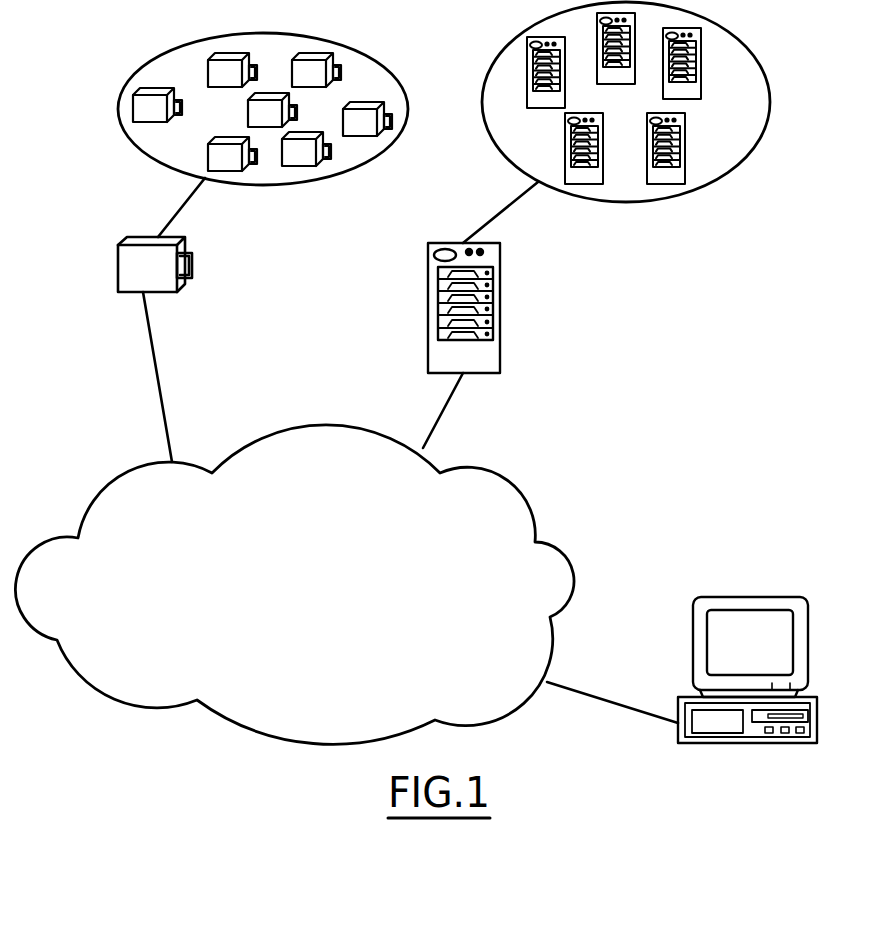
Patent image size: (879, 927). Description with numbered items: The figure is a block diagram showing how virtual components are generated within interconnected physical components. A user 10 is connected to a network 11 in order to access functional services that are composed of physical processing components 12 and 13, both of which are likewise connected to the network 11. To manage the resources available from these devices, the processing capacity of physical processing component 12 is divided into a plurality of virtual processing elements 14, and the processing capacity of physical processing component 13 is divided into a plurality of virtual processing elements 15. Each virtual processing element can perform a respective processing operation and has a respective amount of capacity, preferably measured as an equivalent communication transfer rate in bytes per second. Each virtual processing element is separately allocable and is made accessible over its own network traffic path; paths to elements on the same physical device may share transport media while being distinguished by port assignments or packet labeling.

The user 10 is at (723, 743).
The network 11 is at (346, 583).
The physical processing component 12 is at (187, 243).
The physical processing component 13 is at (500, 307).
The virtual processing elements 14 is at (358, 52).
The virtual processing elements 15 is at (753, 47).